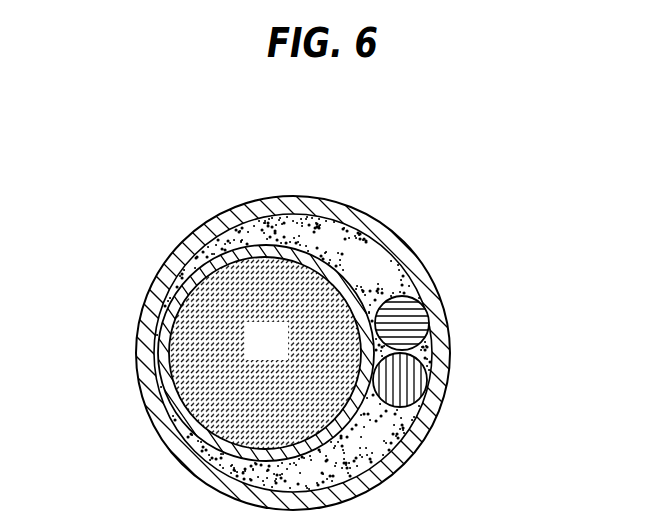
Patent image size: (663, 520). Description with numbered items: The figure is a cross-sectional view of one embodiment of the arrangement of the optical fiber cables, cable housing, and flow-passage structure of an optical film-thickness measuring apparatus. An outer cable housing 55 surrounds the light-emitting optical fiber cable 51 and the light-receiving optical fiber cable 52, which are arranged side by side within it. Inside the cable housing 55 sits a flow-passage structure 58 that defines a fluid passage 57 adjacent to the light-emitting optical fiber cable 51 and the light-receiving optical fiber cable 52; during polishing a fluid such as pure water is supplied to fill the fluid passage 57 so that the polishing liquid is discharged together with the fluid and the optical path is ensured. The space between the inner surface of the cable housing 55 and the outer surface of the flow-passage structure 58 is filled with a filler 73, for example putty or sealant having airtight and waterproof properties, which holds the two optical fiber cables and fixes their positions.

The cable housing 55 is at (183, 245).
The flow-passage structure 58 is at (345, 245).
The filler 73 is at (384, 277).
The fluid passage 57 is at (249, 356).
The light-emitting optical fiber cable 51 is at (408, 297).
The light-receiving optical fiber cable 52 is at (408, 406).